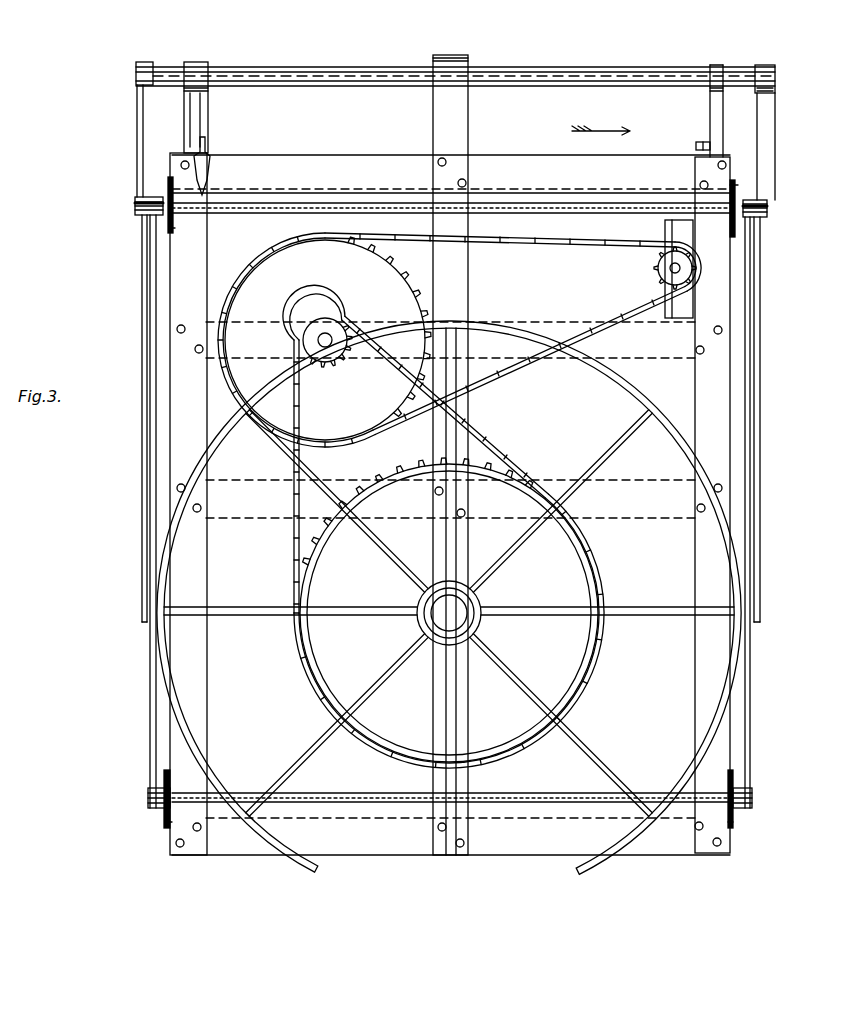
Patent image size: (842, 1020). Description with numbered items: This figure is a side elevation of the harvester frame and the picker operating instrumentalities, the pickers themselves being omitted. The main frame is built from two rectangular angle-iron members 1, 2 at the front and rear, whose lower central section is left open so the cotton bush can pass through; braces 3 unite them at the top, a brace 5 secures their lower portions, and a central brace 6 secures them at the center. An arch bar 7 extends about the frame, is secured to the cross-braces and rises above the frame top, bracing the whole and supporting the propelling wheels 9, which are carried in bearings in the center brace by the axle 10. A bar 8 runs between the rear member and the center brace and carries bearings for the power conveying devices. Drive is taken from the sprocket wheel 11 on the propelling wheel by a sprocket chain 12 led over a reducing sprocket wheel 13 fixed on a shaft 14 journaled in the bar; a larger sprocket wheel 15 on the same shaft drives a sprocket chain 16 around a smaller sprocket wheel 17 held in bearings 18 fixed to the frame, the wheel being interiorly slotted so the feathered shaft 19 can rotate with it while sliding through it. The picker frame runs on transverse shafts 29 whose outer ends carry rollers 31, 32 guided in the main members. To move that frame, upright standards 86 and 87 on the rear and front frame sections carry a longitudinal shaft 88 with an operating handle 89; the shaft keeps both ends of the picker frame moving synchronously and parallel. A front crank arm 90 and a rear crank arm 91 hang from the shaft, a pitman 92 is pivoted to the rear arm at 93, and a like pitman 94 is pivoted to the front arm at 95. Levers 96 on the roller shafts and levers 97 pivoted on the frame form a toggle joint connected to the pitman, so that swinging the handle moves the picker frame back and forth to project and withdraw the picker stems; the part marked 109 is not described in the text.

The rectangular frame member 1 is at (715, 505).
The rectangular frame member 2 is at (185, 504).
The brace 3 is at (451, 174).
The brace 5 is at (451, 836).
The central brace 6 is at (450, 420).
The arch bar 7 is at (410, 708).
The bar 8 is at (222, 368).
The propelling wheel 9 is at (640, 620).
The axle 10 is at (449, 613).
The sprocket wheel 11 is at (317, 584).
The sprocket chain 12 is at (500, 452).
The reducing sprocket wheel 13 is at (334, 373).
The shaft 14 is at (325, 338).
The larger sprocket wheel 15 is at (328, 338).
The sprocket chain 16 is at (459, 340).
The smaller sprocket wheel 17 is at (663, 277).
The bearings 18 is at (667, 232).
The feathered shaft 19 is at (679, 267).
The transverse shaft 29 is at (270, 210).
The roller 31 is at (737, 187).
The roller 32 is at (733, 822).
The upright standard 86 is at (190, 120).
The upright standard 87 is at (723, 128).
The longitudinal shaft 88 is at (160, 72).
The operating handle 89 is at (207, 110).
The crank arm 90 is at (775, 137).
The crank arm 91 is at (140, 147).
The pitman 92 is at (170, 332).
The pivot 93 is at (140, 211).
The pitman 94 is at (763, 294).
The pivot 95 is at (775, 205).
The lever 96 is at (135, 203).
The lever 97 is at (158, 196).
The rod 109 is at (755, 657).